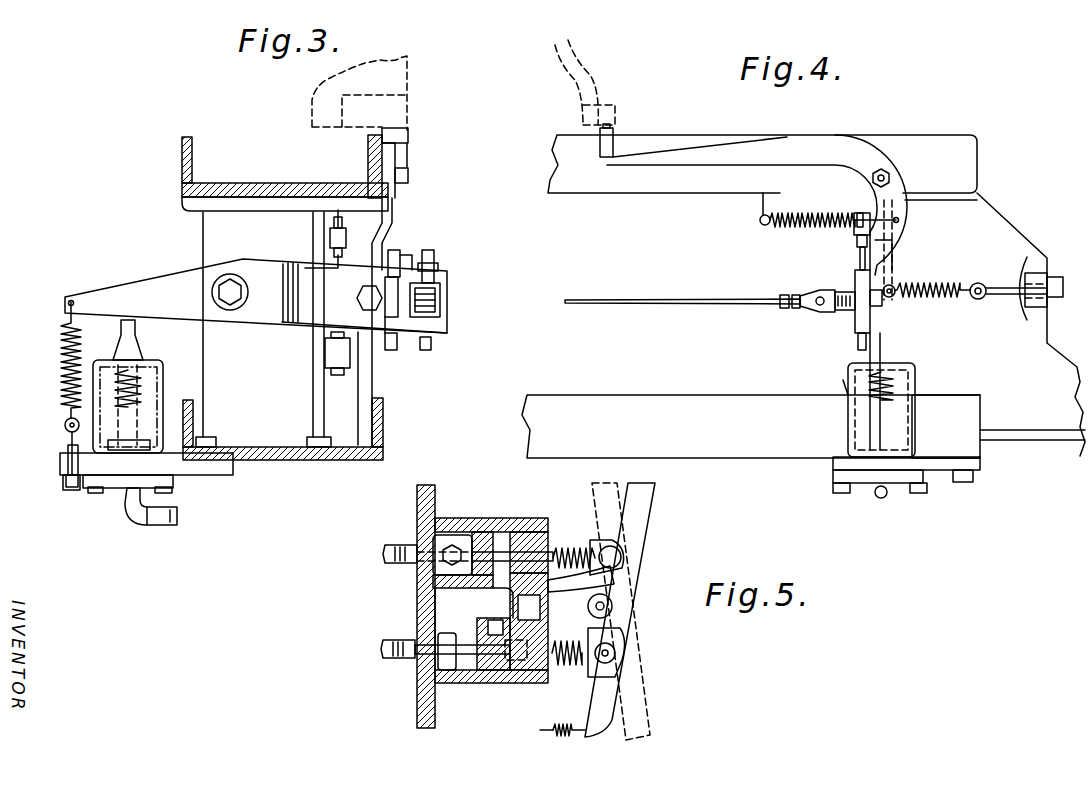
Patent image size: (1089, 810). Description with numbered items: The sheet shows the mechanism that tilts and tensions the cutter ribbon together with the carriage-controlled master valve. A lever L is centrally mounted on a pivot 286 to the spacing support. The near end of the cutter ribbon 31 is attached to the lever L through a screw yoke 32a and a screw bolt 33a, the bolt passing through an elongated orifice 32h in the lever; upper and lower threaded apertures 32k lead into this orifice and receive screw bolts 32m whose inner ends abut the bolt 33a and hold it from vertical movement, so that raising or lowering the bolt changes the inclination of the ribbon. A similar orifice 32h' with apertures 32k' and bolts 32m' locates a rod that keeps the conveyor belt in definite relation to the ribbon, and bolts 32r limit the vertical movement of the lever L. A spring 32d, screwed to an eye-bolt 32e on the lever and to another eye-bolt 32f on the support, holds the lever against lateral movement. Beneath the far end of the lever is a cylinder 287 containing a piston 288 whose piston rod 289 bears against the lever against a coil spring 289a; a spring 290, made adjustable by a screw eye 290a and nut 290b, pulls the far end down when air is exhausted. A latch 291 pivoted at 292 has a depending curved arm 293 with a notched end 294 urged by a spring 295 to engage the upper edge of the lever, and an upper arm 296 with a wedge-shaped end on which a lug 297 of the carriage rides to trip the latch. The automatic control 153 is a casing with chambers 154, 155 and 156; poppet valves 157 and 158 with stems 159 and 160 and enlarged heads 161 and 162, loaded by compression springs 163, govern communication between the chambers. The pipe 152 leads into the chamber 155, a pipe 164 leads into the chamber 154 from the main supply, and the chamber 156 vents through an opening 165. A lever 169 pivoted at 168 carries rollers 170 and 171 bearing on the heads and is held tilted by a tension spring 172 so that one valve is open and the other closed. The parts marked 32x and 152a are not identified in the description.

In FIG. 3, the cutter ribbon 31 is at (441, 300).
In FIG. 4, the cutter ribbon 31 is at (718, 300).
In FIG. 3, the pivot pin 32x is at (329, 237).
In FIG. 4, the pivot pin 32x is at (860, 214).
In FIG. 3, the screw bolts 32m is at (400, 314).
In FIG. 4, the screw bolts 32m is at (831, 299).
In FIG. 3, the bolts 32m' is at (422, 217).
In FIG. 3, the vertical threaded apertures 32k is at (454, 291).
In FIG. 3, the apertures 32k' is at (433, 228).
In FIG. 3, the elongated orifice 32h is at (427, 283).
In FIG. 3, the orifice 32h' is at (382, 356).
In FIG. 3, the bolts 32r is at (325, 358).
In FIG. 4, the screw yoke 32a is at (833, 290).
In FIG. 4, the spring 32d is at (913, 285).
In FIG. 4, the eye-bolt 32e is at (895, 300).
In FIG. 4, the eye-bolt 32f is at (1000, 292).
In FIG. 4, the screw bolt 33a is at (818, 293).
In FIG. 5, the pipe 152 is at (395, 658).
In FIG. 3, the nut 152a is at (162, 520).
In FIG. 4, the nut 152a is at (888, 496).
In FIG. 5, the automatic control 153 is at (518, 560).
In FIG. 5, the chamber 154 is at (447, 540).
In FIG. 5, the chamber 155 is at (490, 600).
In FIG. 5, the chamber 156 is at (535, 621).
In FIG. 5, the poppet valve 157 is at (420, 585).
In FIG. 5, the poppet valve 158 is at (455, 670).
In FIG. 5, the valve stem 159 is at (540, 545).
In FIG. 5, the valve stem 160 is at (556, 668).
In FIG. 5, the enlarged head 161 is at (581, 554).
In FIG. 5, the enlarged head 162 is at (595, 700).
In FIG. 5, the compression springs 163 is at (612, 600).
In FIG. 5, the pipe 164 is at (395, 545).
In FIG. 5, the opening 165 is at (512, 660).
In FIG. 5, the pivot 168 is at (605, 608).
In FIG. 5, the lever 169 is at (648, 570).
In FIG. 5, the roller 170 is at (623, 555).
In FIG. 5, the roller 171 is at (625, 672).
In FIG. 5, the tension spring 172 is at (540, 732).
In FIG. 3, the pivot 286 is at (216, 283).
In FIG. 3, the cylinder 287 is at (95, 412).
In FIG. 4, the cylinder 287 is at (843, 380).
In FIG. 3, the piston 288 is at (112, 412).
In FIG. 4, the piston 288 is at (910, 412).
In FIG. 3, the piston rod 289 is at (138, 326).
In FIG. 4, the piston rod 289 is at (882, 343).
In FIG. 3, the coil spring 289a is at (140, 388).
In FIG. 4, the coil spring 289a is at (906, 370).
In FIG. 3, the spring 290 is at (63, 350).
In FIG. 3, the screw eye 290a is at (66, 445).
In FIG. 3, the nut 290b is at (78, 490).
In FIG. 3, the latch 291 is at (366, 190).
In FIG. 4, the latch 291 is at (757, 205).
In FIG. 3, the pivot 292 is at (400, 176).
In FIG. 4, the pivot 292 is at (888, 178).
In FIG. 3, the curved arm 293 is at (330, 227).
In FIG. 4, the curved arm 293 is at (896, 238).
In FIG. 3, the notched end 294 is at (306, 268).
In FIG. 4, the notched end 294 is at (881, 280).
In FIG. 4, the spring 295 is at (800, 217).
In FIG. 4, the upper arm 296 is at (688, 155).
In FIG. 4, the lug 297 is at (613, 140).
In FIG. 3, the lever L is at (282, 322).
In FIG. 4, the lever L is at (855, 322).